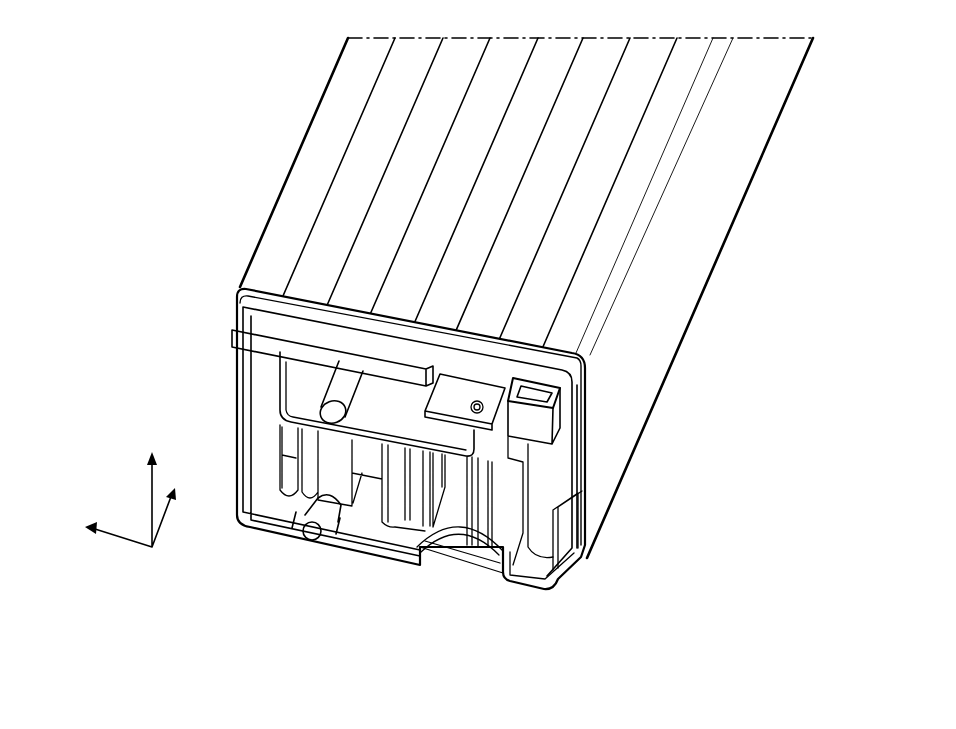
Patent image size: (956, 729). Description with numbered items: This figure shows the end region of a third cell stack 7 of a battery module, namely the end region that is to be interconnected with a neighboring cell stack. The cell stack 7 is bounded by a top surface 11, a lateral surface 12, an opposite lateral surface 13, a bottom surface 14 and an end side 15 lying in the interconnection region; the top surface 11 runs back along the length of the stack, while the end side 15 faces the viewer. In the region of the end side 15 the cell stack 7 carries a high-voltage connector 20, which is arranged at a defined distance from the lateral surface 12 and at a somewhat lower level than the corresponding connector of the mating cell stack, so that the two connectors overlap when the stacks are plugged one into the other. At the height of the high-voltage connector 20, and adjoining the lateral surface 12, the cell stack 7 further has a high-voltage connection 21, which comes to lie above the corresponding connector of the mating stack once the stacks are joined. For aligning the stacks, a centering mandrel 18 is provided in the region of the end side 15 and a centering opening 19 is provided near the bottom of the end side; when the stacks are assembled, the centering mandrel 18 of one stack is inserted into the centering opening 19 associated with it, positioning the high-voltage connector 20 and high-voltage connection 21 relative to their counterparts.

The cell stack 7 is at (282, 143).
The top surface 11 is at (642, 177).
The lateral surface 12 is at (690, 259).
The lateral surface 13 is at (263, 214).
The bottom surface 14 is at (737, 240).
The end side 15 is at (363, 523).
The centering mandrel 18 is at (342, 392).
The centering opening 19 is at (312, 541).
The high-voltage connector 20 is at (460, 398).
The high-voltage connection 21 is at (530, 425).